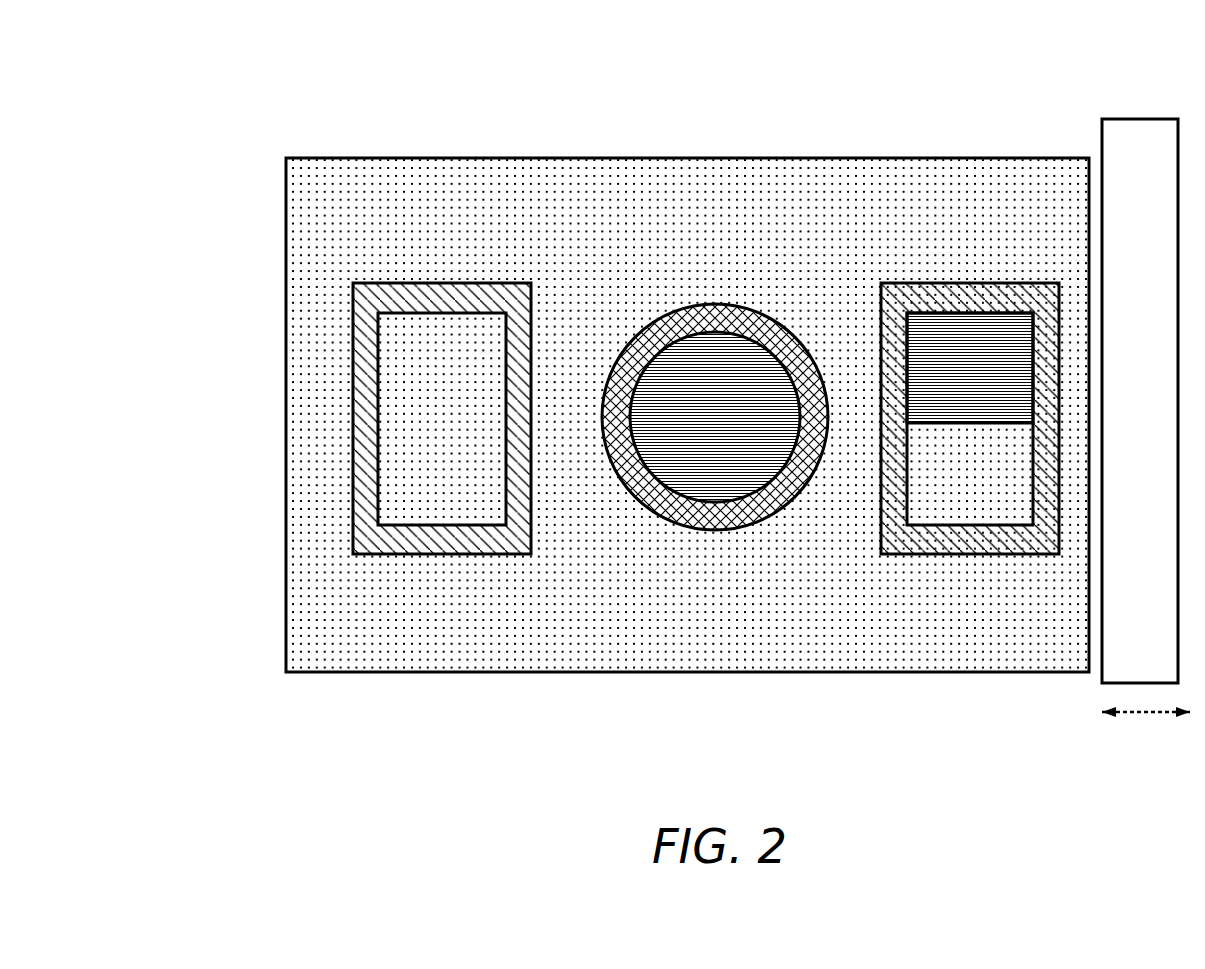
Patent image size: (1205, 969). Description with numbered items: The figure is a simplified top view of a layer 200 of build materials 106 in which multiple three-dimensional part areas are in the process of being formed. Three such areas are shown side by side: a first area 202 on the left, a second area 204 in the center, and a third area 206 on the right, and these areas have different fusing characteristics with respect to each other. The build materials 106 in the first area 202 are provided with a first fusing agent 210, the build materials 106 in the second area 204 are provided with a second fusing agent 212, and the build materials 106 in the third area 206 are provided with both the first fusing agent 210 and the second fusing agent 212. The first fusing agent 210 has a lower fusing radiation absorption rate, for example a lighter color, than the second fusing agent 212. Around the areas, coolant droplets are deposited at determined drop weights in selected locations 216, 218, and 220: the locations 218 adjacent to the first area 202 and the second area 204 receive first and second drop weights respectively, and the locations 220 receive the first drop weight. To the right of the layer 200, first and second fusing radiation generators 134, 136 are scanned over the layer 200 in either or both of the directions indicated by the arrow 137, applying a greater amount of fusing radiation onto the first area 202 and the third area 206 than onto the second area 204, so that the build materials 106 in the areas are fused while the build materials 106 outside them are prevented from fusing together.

The layer 200 is at (628, 391).
The build materials 106 is at (645, 662).
The first area 202 is at (620, 434).
The second area 204 is at (817, 311).
The third area 206 is at (917, 448).
The first fusing agent 210 is at (426, 312).
The second fusing agent 212 is at (695, 333).
The locations 216 is at (472, 282).
The locations 218 is at (712, 305).
The locations 220 is at (885, 555).
The first fusing radiation generator 134 is at (1150, 365).
The second fusing radiation generator 136 is at (1140, 119).
The arrow 137 is at (1150, 714).